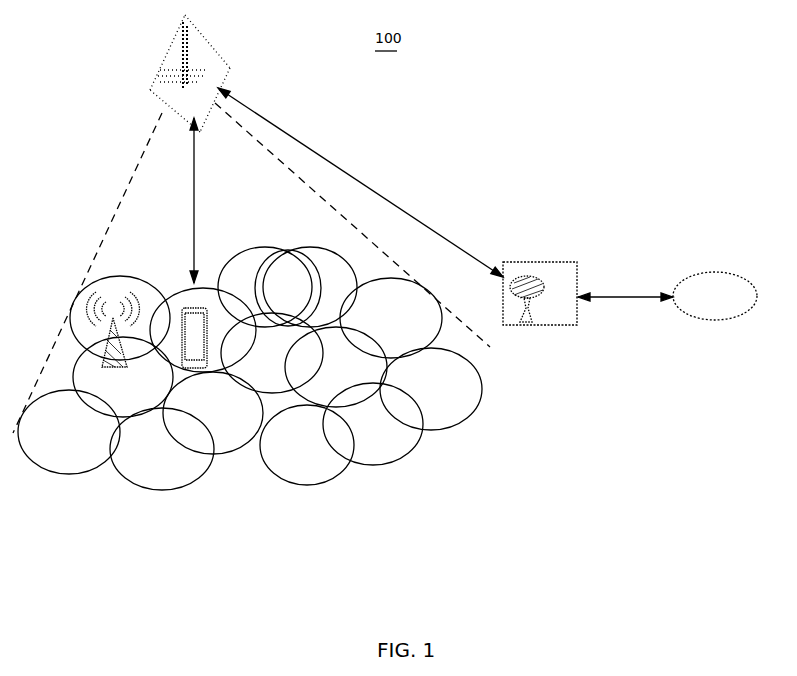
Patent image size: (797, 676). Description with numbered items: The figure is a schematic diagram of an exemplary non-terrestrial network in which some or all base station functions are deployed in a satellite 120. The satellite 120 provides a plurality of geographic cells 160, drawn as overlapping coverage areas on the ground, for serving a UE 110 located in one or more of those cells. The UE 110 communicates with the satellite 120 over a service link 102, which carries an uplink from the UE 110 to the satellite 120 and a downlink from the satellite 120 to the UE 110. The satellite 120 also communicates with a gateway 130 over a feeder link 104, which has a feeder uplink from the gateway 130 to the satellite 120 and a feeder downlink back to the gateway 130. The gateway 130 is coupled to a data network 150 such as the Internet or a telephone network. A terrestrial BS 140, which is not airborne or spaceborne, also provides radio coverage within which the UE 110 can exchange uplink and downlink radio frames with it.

The service link 102 is at (194, 216).
The communication link between satellite and gateway 104 is at (375, 188).
The UE 110 is at (195, 335).
The satellite 120 is at (213, 57).
The gateway 130 is at (558, 262).
The terrestrial BS 140 is at (100, 303).
The data network 150 is at (715, 272).
The geographic cells 160 is at (378, 440).